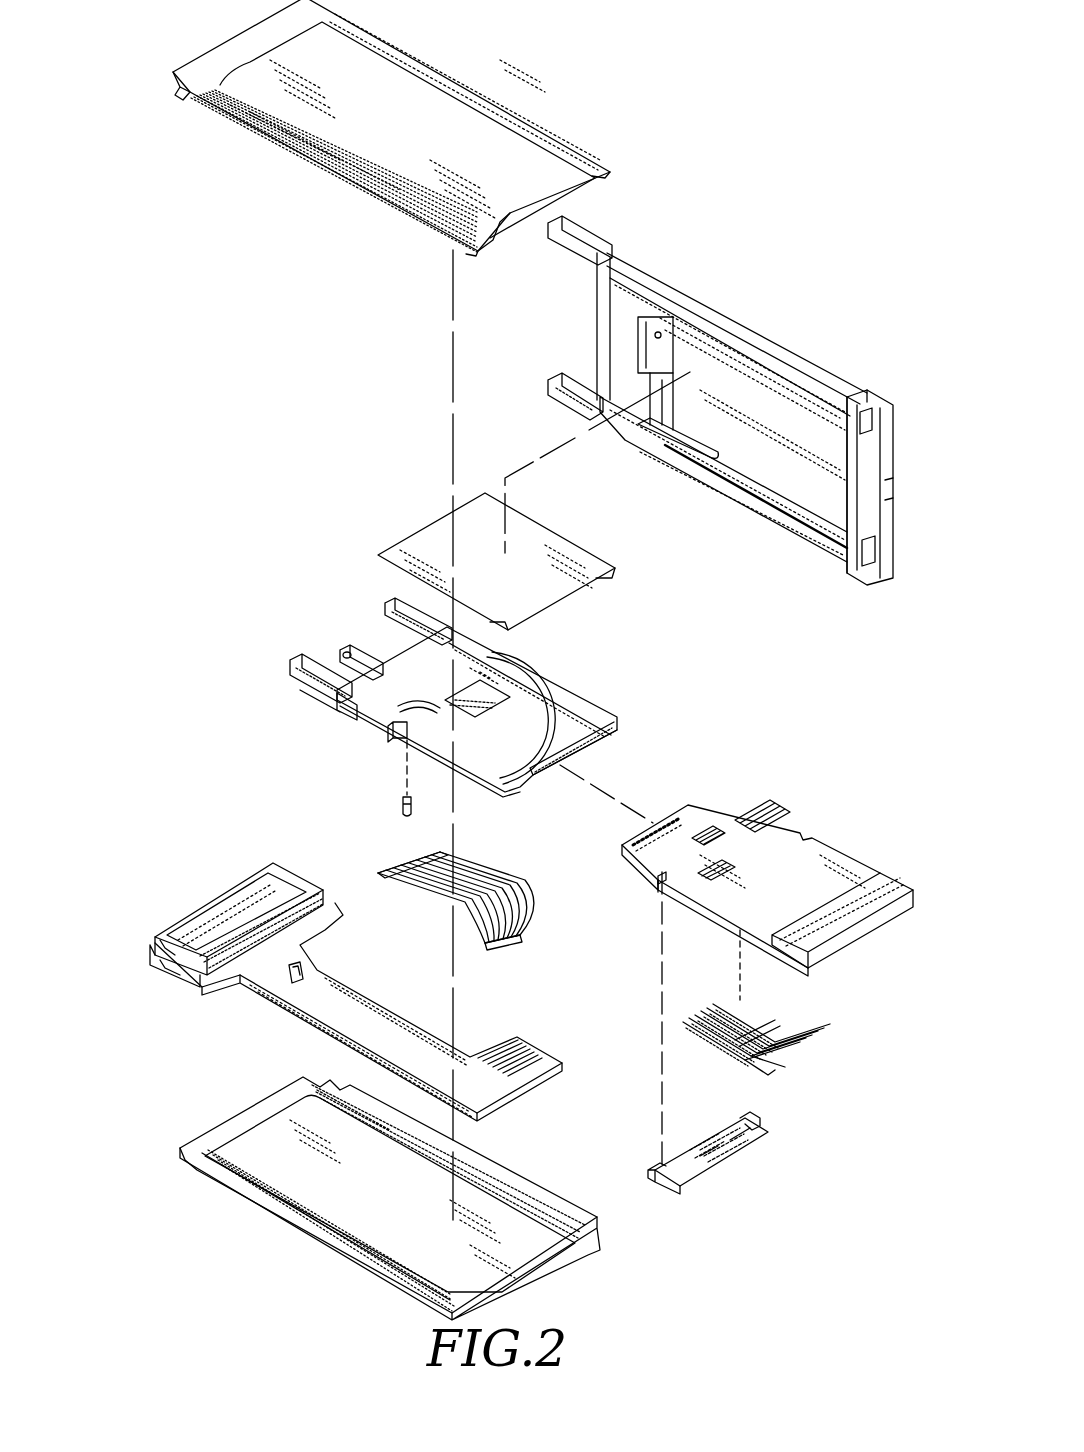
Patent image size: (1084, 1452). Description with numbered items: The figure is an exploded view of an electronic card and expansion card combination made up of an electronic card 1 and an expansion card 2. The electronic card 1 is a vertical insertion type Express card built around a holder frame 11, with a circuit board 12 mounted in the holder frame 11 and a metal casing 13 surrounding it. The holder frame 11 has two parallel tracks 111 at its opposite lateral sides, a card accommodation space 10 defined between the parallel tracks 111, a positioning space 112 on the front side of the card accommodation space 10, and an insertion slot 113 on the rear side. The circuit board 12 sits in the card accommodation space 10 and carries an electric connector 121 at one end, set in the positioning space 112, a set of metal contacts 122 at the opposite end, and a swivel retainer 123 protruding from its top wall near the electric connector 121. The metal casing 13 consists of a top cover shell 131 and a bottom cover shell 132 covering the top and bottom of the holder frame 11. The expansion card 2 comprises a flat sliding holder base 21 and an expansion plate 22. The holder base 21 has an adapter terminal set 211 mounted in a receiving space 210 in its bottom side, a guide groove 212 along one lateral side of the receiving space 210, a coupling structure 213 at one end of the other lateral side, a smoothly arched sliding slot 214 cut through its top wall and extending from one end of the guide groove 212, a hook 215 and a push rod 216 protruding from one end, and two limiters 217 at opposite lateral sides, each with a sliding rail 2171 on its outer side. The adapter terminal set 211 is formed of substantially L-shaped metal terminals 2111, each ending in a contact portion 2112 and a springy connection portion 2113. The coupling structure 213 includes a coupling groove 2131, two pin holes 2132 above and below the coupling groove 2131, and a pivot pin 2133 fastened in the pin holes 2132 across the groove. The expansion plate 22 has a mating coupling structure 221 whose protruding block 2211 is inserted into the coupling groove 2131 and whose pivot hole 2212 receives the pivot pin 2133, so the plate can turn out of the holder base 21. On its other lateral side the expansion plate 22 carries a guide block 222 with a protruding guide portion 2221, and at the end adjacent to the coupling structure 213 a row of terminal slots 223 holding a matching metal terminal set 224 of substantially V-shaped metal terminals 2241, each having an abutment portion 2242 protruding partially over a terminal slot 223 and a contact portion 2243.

The electronic card 1 is at (338, 380).
The expansion card 2 is at (678, 683).
The card accommodation space 10 is at (628, 325).
The holder frame 11 is at (823, 372).
The parallel tracks 111 is at (735, 348).
The positioning space 112 is at (577, 373).
The insertion slot 113 is at (879, 470).
The circuit board 12 is at (317, 1012).
The electric connector 121 is at (232, 894).
The metal contacts 122 is at (497, 1044).
The swivel retainer 123 is at (293, 988).
The metal casing 13 is at (236, 1225).
The top cover shell 131 is at (207, 63).
The bottom cover shell 132 is at (238, 1118).
The flat sliding holder base 21 is at (582, 706).
The receiving space 210 is at (597, 756).
The adapter terminal set 211 is at (407, 934).
The metal terminals 2111 is at (417, 882).
The contact portion 2112 is at (400, 854).
The springy connection portion 2113 is at (503, 950).
The guide groove 212 is at (618, 731).
The coupling structure 213 is at (273, 815).
The coupling groove 2131 is at (395, 733).
The pin holes 2132 is at (398, 718).
The pivot pin 2133 is at (401, 803).
The sliding slot 214 is at (517, 670).
The hook 215 is at (362, 648).
The push rod 216 is at (347, 662).
The limiters 217 is at (297, 662).
The sliding rail 2171 is at (305, 690).
The expansion plate 22 is at (808, 850).
The coupling structure 221 is at (568, 858).
The protruding block 2211 is at (660, 885).
The pivot hole 2212 is at (662, 872).
The guide block 222 is at (729, 1173).
The guide portion 2221 is at (753, 1127).
The terminal slots 223 is at (668, 823).
The matching metal terminal set 224 is at (708, 1053).
The V-shaped metal terminals 2241 is at (790, 1050).
The abutment portion 2242 is at (708, 1006).
The contact portion 2243 is at (815, 1006).